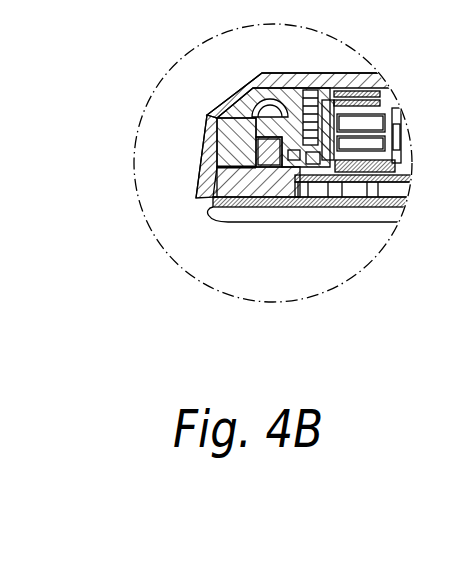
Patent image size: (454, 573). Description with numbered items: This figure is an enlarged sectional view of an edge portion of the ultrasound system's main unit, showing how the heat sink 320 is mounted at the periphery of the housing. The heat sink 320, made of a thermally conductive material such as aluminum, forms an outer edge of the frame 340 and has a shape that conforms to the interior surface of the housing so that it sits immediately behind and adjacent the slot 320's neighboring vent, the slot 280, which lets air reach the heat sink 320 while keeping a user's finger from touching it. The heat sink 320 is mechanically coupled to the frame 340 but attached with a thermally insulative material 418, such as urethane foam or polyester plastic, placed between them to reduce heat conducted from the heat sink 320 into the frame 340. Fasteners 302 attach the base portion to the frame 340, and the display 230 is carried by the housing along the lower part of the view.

The display 230 is at (367, 212).
The slot 280 is at (240, 90).
The fasteners 302 is at (262, 88).
The heat sink 320 is at (207, 117).
The frame 340 is at (218, 115).
The thermally insulative material 418 is at (197, 195).